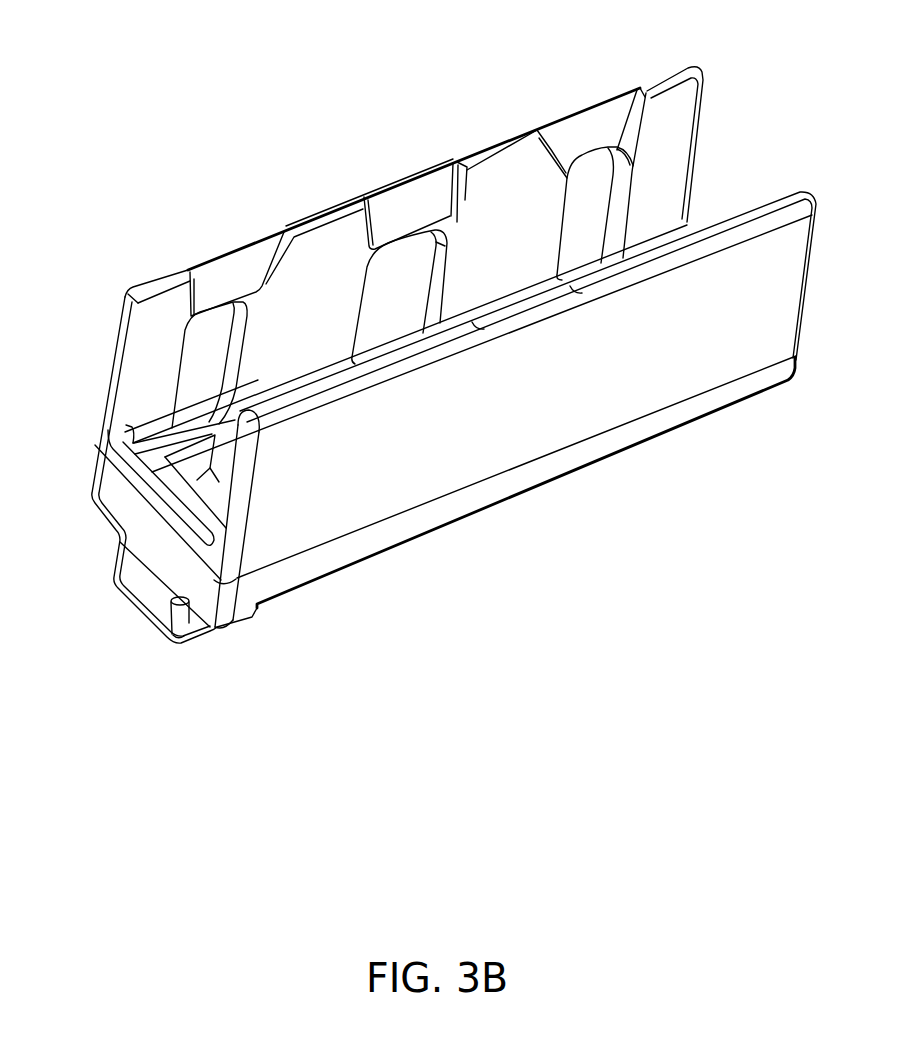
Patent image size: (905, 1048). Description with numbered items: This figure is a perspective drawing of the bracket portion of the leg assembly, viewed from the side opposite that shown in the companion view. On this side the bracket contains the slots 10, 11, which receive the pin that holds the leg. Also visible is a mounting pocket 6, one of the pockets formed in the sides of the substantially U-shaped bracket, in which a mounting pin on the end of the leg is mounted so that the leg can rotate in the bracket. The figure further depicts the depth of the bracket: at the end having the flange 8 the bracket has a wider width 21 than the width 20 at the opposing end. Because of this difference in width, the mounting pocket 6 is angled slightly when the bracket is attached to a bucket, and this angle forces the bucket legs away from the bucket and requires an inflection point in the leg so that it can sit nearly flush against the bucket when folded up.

The mounting pocket 6 is at (398, 280).
The flange 8 is at (157, 627).
The slot 10 is at (207, 343).
The slot 11 is at (588, 188).
The width 20 is at (802, 352).
The width 21 is at (78, 443).